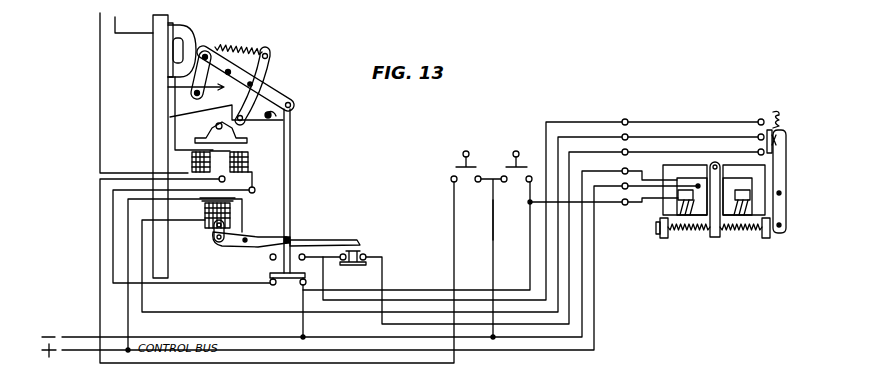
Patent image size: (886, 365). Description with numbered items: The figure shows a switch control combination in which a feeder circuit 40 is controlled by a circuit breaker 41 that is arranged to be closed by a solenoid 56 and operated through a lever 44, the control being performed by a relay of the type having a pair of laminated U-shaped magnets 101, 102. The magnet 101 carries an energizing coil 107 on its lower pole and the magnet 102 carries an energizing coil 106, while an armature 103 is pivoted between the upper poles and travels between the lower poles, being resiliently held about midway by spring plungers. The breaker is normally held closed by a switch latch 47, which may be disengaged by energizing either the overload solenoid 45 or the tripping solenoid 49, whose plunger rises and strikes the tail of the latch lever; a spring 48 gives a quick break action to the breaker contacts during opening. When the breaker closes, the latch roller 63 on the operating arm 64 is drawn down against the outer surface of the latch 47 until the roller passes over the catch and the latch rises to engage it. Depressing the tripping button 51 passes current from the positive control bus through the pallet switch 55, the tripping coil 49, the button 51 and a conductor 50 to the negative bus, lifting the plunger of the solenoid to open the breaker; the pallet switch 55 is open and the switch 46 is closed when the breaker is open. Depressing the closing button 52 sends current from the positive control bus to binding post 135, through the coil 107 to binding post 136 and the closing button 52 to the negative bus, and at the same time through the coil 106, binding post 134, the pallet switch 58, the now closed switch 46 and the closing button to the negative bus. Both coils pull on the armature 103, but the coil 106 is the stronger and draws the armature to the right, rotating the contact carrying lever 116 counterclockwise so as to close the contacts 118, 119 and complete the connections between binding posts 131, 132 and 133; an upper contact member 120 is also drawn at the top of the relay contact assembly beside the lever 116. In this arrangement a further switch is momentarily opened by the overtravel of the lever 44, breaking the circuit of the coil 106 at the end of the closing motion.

The feeder circuit 40 is at (100, 40).
The circuit breaker 41 is at (215, 46).
The lever 44 is at (290, 176).
The overload solenoid 45 is at (190, 160).
The switch 46 is at (270, 257).
The switch latch 47 is at (234, 136).
The spring 48 is at (252, 48).
The tripping solenoid 49 is at (237, 185).
The conductor 50 is at (494, 240).
The tripping button 51 is at (466, 177).
The closing button 52 is at (516, 177).
The pallet switch 55 is at (288, 285).
The solenoid 56 is at (232, 222).
The pallet switch 58 is at (332, 268).
The latch roller 63 is at (271, 112).
The operating arm 64 is at (292, 104).
The laminated U-shaped magnet 101 is at (685, 190).
The laminated U-shaped magnet 102 is at (744, 190).
The armature 103 is at (716, 237).
The energizing coil 106 is at (741, 199).
The energizing coil 107 is at (687, 202).
The contact carrying lever 116 is at (786, 205).
The contact 118 is at (784, 141).
The contact 119 is at (757, 151).
The contact finger 120 is at (781, 120).
The binding post 131 is at (673, 117).
The binding post 132 is at (673, 132).
The binding post 133 is at (673, 147).
The binding post 134 is at (632, 168).
The binding post 135 is at (644, 181).
The binding post 136 is at (633, 197).